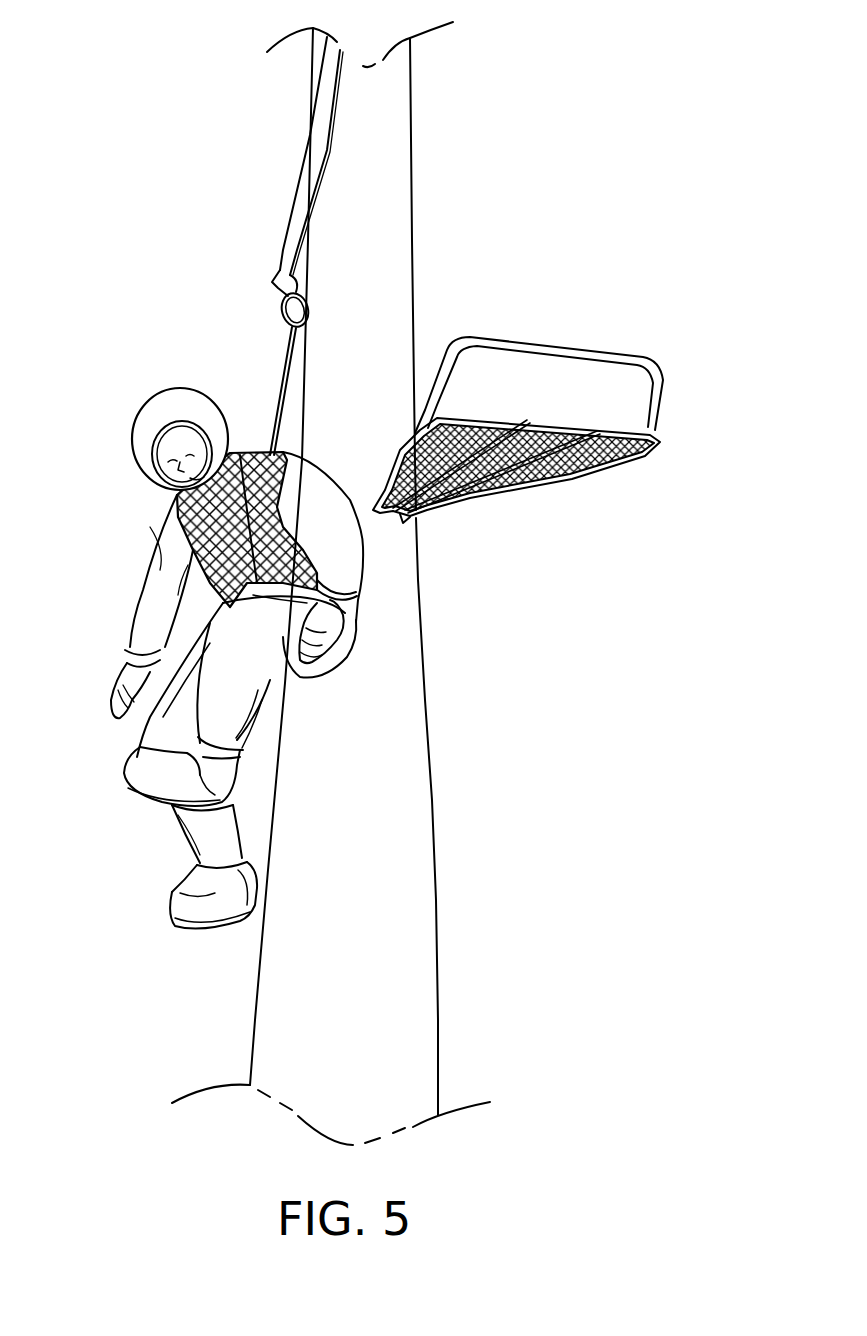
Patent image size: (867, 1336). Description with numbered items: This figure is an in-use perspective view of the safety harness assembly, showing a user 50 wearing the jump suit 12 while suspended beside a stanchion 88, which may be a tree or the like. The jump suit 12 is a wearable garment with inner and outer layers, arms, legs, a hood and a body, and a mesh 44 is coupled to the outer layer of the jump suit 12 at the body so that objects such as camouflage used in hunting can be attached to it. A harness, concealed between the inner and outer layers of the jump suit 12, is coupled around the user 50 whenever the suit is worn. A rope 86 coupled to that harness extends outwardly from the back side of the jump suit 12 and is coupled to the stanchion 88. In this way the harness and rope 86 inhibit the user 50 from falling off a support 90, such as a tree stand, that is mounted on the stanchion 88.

The jump suit 12 is at (158, 528).
The mesh 44 is at (257, 449).
The user 50 is at (157, 439).
The rope 86 is at (287, 343).
The stanchion 88 is at (410, 173).
The support 90 is at (658, 439).